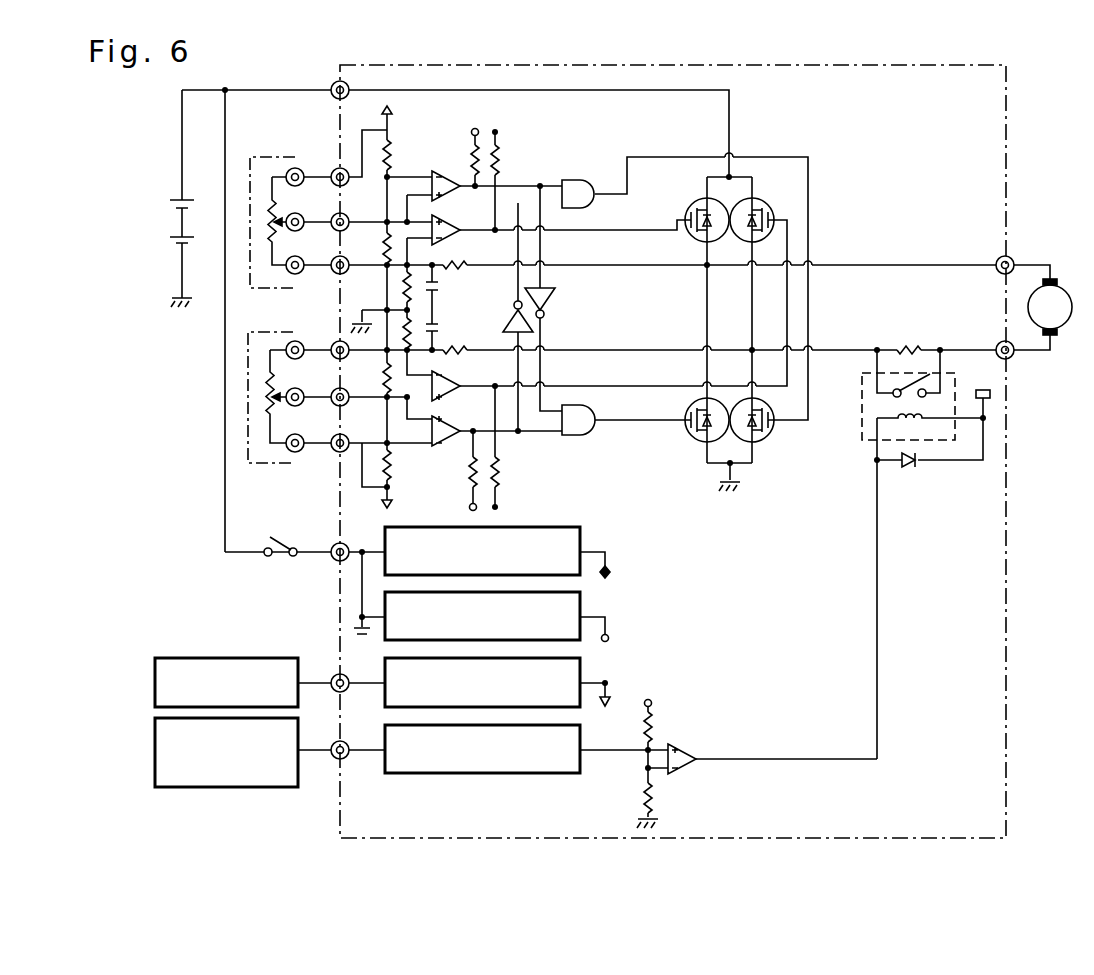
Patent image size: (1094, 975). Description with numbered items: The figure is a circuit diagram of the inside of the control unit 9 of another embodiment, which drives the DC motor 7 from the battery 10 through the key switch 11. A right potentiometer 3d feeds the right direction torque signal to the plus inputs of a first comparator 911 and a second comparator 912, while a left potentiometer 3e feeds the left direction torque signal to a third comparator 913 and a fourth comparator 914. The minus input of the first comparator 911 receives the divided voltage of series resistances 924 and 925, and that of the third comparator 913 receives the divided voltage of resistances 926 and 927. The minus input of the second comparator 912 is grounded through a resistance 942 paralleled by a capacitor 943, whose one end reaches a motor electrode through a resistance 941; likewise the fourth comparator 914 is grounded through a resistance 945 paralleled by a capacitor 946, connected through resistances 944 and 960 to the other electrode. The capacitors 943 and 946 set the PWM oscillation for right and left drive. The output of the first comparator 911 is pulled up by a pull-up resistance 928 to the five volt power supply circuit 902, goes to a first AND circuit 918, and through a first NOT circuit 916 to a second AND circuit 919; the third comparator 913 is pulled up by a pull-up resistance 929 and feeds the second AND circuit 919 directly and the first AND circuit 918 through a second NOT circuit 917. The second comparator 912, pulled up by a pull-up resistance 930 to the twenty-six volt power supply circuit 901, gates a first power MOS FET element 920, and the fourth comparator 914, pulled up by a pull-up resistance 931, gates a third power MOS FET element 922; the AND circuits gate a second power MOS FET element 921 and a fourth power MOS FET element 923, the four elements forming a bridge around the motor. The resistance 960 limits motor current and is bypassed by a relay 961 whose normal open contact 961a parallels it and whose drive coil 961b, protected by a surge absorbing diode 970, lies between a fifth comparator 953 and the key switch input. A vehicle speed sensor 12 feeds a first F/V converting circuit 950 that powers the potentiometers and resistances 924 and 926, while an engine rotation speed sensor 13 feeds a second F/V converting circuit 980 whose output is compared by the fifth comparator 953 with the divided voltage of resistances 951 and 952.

The right potentiometer 3d is at (272, 157).
The left potentiometer 3e is at (270, 463).
The DC motor 7 is at (1066, 328).
The control unit 9 is at (1006, 802).
The battery 10 is at (193, 218).
The key switch 11 is at (283, 557).
The vehicle speed sensor 12 is at (210, 658).
The engine rotation speed sensor 13 is at (247, 787).
The (+)26 V power supply circuit 901 is at (580, 540).
The (+)5 V power supply circuit 902 is at (580, 607).
The first comparator 911 is at (432, 172).
The second comparator 912 is at (470, 222).
The third comparator 913 is at (442, 446).
The fourth comparator 914 is at (438, 397).
The first NOT circuit 916 is at (555, 295).
The second NOT circuit 917 is at (535, 325).
The first AND circuit 918 is at (582, 180).
The second AND circuit 919 is at (577, 434).
The first power MOS FET element 920 is at (683, 205).
The second power MOS FET element 921 is at (773, 437).
The third power MOS FET element 922 is at (787, 185).
The fourth power MOS FET element 923 is at (688, 438).
The resistance 924 is at (389, 148).
The resistance 925 is at (385, 240).
The resistance 926 is at (393, 467).
The resistance 927 is at (387, 380).
The pull-up resistance 928 is at (472, 172).
The pull-up resistance 929 is at (478, 467).
The pull-up resistance 930 is at (498, 170).
The pull-up resistance 931 is at (497, 477).
The resistance 941 is at (458, 262).
The resistance 942 is at (407, 292).
The capacitor 943 is at (438, 285).
The resistance 944 is at (455, 356).
The resistance 945 is at (407, 337).
The capacitor 946 is at (440, 328).
The first F/V converting circuit 950 is at (580, 672).
The resistance 951 is at (655, 730).
The resistance 952 is at (645, 797).
The fifth comparator 953 is at (683, 773).
The resistance 960 is at (912, 340).
The relay 961 is at (952, 400).
The normal open contact 961a is at (930, 383).
The drive coil 961b is at (910, 427).
The diode 970 is at (910, 467).
The second F/V converting circuit 980 is at (533, 773).